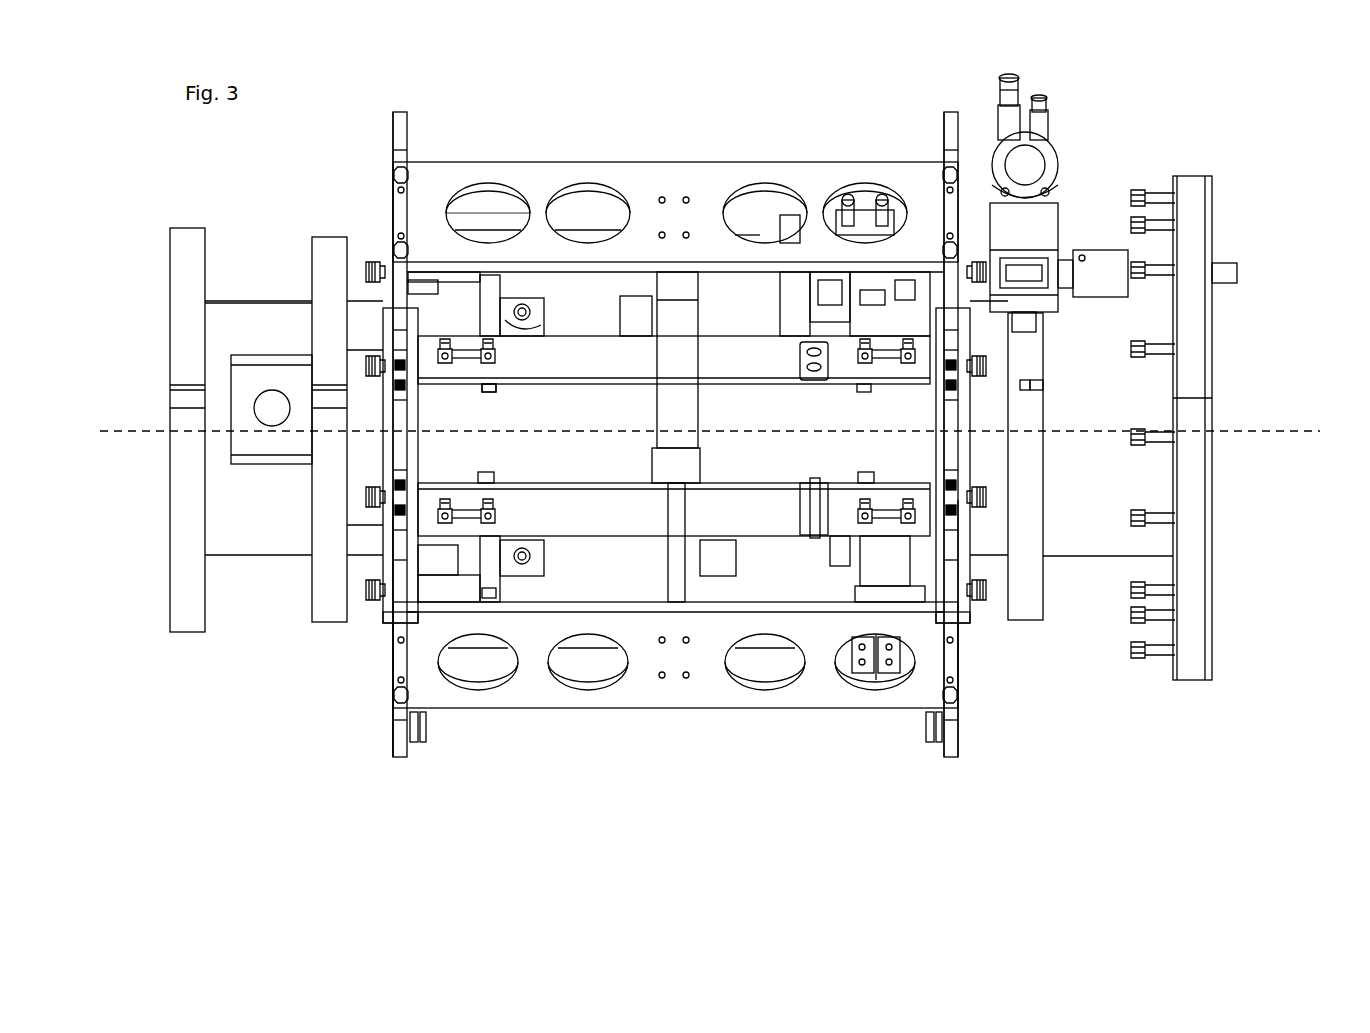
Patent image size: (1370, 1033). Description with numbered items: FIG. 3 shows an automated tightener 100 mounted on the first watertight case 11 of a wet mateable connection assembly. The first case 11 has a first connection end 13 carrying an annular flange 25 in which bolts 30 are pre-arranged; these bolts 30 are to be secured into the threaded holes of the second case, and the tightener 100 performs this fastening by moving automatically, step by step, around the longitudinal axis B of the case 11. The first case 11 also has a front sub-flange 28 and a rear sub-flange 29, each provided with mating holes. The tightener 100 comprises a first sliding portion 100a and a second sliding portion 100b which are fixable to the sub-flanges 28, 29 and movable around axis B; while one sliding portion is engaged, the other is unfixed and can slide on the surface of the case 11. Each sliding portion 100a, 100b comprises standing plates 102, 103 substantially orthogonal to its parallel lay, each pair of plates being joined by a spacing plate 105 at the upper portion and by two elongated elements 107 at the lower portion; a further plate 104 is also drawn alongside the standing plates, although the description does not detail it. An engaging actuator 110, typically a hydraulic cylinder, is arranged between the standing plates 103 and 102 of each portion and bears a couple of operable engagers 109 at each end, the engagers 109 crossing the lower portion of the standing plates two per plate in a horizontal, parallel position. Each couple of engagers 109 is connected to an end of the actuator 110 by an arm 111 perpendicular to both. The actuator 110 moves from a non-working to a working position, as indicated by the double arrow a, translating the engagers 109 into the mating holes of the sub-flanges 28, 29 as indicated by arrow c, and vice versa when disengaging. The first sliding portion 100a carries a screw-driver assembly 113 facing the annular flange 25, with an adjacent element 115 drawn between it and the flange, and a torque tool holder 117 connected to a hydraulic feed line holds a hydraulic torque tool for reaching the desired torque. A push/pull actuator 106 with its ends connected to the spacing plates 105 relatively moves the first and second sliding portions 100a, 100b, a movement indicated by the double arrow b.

The automated tightener 100 is at (1000, 715).
The first sliding portion 100a is at (705, 125).
The second sliding portion 100b is at (773, 738).
The standing plate 102 is at (952, 572).
The standing plate 103 is at (940, 298).
The slide plate 104 is at (963, 440).
The spacing plate 105 is at (539, 186).
The push/pull actuator 106 is at (672, 405).
The elongated element 107 is at (780, 375).
The operable engager 109 is at (377, 273).
The engaging actuator 110 is at (634, 312).
The arm 111 is at (493, 392).
The screw-driver assembly 113 is at (1083, 160).
The coupling clamp 115 is at (1110, 288).
The torque tool holder 117 is at (1016, 158).
The first watertight case 11 is at (262, 597).
The first connection end 13 is at (1237, 622).
The annular flange 25 is at (1205, 478).
The front sub-flange 28 is at (1035, 530).
The rear sub-flange 29 is at (331, 600).
The bolts 30 is at (1160, 432).
The longitudinal axis B is at (716, 408).
The double arrow a is at (648, 307).
The direction of movement b is at (677, 405).
The arrow c is at (330, 487).